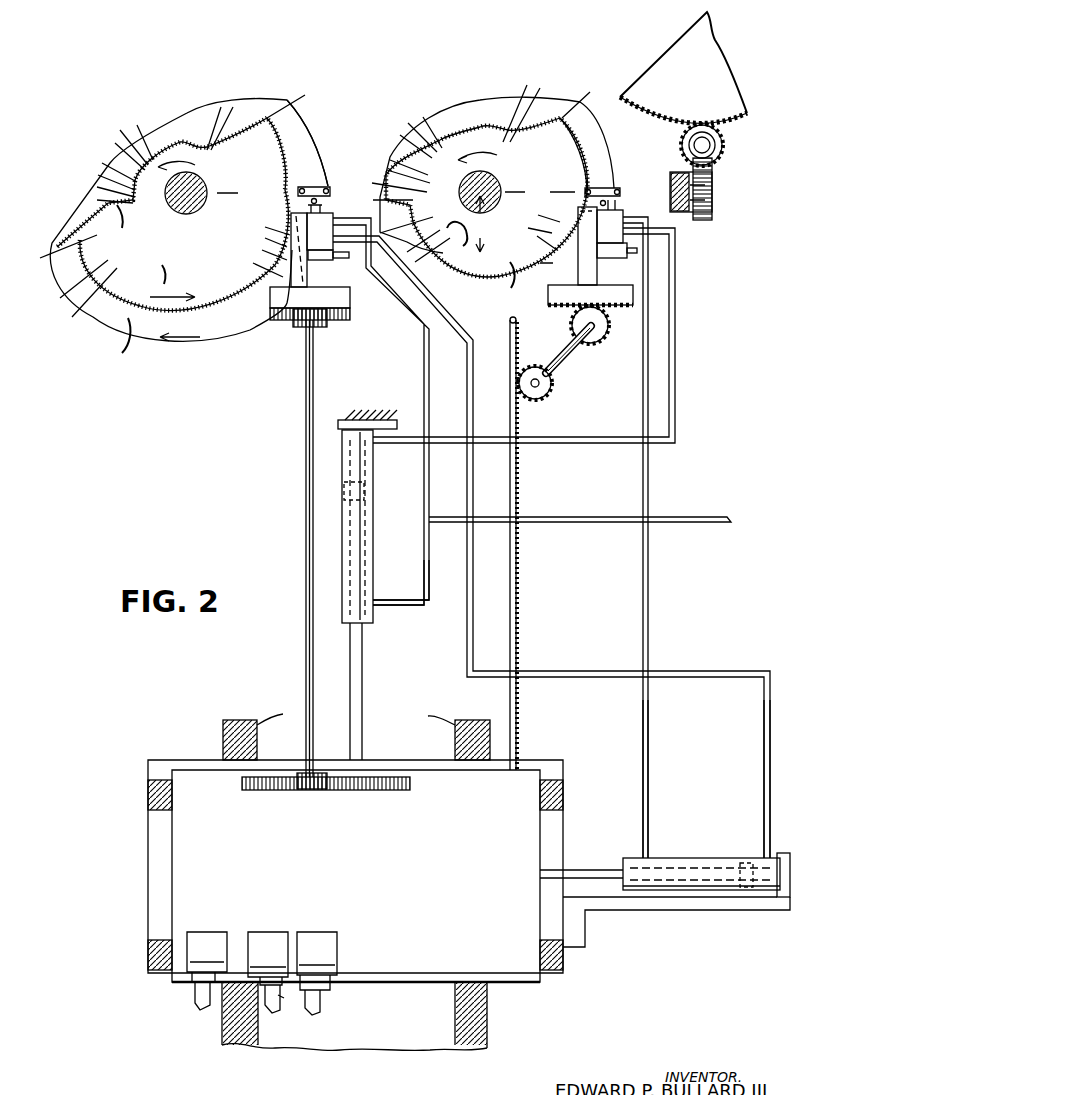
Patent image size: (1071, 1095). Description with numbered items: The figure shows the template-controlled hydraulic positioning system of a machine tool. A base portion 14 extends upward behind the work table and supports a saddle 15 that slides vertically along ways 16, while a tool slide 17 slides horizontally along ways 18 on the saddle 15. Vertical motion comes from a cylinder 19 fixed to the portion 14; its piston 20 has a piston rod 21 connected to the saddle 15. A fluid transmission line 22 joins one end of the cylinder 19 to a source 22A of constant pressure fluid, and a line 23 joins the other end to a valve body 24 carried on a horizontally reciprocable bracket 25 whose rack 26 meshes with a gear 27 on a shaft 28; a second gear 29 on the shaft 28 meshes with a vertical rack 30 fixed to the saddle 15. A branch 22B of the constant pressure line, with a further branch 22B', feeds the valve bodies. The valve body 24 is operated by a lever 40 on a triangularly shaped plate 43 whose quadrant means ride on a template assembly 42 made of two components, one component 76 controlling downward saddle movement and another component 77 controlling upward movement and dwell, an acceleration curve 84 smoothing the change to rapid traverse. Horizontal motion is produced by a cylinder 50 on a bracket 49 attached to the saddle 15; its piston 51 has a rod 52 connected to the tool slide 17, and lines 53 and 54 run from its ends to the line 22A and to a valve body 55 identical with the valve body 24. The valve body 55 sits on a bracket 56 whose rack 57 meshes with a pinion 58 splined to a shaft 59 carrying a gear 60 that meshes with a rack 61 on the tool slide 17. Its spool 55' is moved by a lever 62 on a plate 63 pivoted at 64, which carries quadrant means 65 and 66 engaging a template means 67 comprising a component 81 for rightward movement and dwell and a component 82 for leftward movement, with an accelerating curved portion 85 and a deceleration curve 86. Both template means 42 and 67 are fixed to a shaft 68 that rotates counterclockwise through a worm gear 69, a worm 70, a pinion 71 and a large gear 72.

The template means 67 is at (171, 99).
The template assembly 42 is at (473, 86).
The shaft 68 is at (176, 212).
The accelerating curved portion 85 is at (53, 243).
The deceleration curve 86 is at (130, 224).
The template component 81 is at (152, 271).
The template component 82 is at (111, 347).
The plate 63 is at (300, 186).
The pivot 64 is at (303, 199).
The quadrant means 65 is at (299, 190).
The quadrant means 66 is at (321, 186).
The lever 62 is at (326, 190).
The spool 55' is at (345, 183).
The valve body 55 is at (323, 246).
The bracket 56 is at (345, 296).
The rack 57 is at (341, 321).
The pinion 58 is at (297, 327).
The shaft 59 is at (306, 496).
The conduit 22B' is at (551, 538).
The fluid transmission line 22 is at (403, 602).
The line 23 is at (454, 436).
The branch 22B is at (666, 537).
The source of constant pressure fluid 22A is at (710, 517).
The cylinder 19 is at (366, 465).
The piston 20 is at (366, 497).
The piston rod 21 is at (362, 674).
The acceleration curve 84 is at (458, 244).
The template component 76 is at (502, 283).
The template component 77 is at (587, 160).
The triangularly shaped plate 43 is at (600, 186).
The lever 40 is at (613, 196).
The valve body 24 is at (612, 225).
The bracket 25 is at (587, 253).
The rack 26 is at (565, 306).
The gear 27 is at (603, 330).
The shaft 28 is at (555, 362).
The gear 29 is at (540, 396).
The vertical rack 30 is at (512, 344).
The large gear 72 is at (673, 62).
The worm 70 is at (718, 146).
The pinion 71 is at (720, 162).
The worm gear 69 is at (712, 205).
The tool slide 17 is at (452, 896).
The ways 18 is at (160, 795).
The ways 16 is at (238, 728).
The base portion 14 is at (432, 730).
The saddle 15 is at (557, 832).
The rack 61 is at (383, 786).
The gear 60 is at (314, 787).
The cylinder 50 is at (693, 858).
The piston 51 is at (748, 860).
The rod 52 is at (604, 872).
The bracket 49 is at (660, 905).
The line 53 is at (644, 748).
The line 54 is at (765, 750).